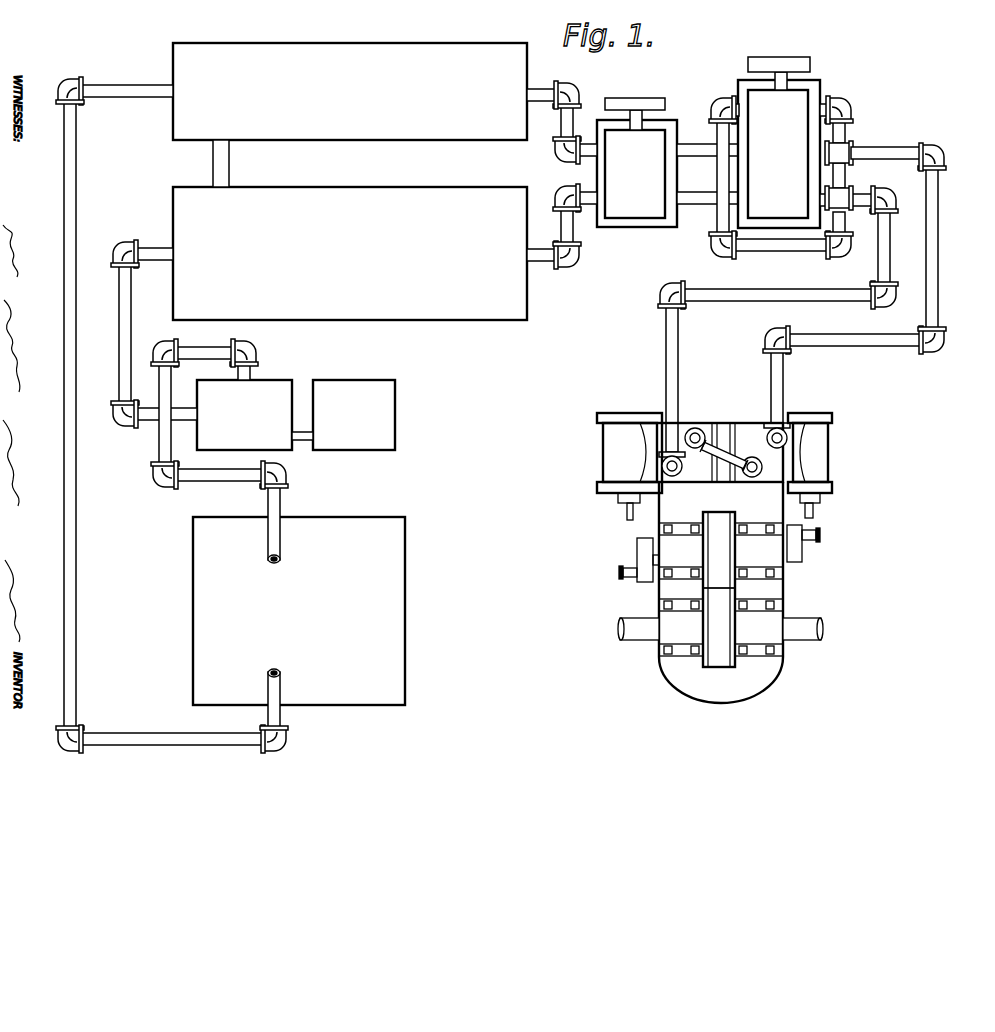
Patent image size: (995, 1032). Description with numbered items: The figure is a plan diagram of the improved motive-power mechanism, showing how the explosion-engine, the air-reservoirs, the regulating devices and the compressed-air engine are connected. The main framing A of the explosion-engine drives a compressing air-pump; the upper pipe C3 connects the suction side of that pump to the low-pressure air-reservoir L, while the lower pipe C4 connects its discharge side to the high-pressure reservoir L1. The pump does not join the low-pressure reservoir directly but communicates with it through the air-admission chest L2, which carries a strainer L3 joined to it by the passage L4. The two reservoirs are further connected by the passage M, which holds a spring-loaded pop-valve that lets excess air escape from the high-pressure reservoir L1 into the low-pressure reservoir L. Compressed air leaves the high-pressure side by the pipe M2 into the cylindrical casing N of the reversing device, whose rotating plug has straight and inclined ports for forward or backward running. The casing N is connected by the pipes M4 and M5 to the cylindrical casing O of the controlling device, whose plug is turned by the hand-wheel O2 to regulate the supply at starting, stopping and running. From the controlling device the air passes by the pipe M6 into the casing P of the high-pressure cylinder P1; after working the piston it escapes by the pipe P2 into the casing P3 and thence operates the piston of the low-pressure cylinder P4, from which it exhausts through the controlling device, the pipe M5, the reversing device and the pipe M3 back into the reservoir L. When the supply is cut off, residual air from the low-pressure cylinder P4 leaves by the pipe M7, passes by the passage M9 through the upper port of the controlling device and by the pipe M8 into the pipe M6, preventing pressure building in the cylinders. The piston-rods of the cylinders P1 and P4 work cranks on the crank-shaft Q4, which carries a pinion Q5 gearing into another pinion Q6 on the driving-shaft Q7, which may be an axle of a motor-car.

The high-pressure reservoir L1 is at (350, 91).
The low-pressure air-reservoir L is at (350, 253).
The passage M is at (221, 161).
The air-admission chest L2 is at (244, 415).
The strainer L3 is at (354, 415).
The passage L4 is at (302, 441).
The main framing of the explosion-engine A is at (299, 611).
The pipe C4 is at (118, 86).
The pipe C3 is at (140, 283).
The cylindrical casing N is at (637, 162).
The pipe M2 is at (567, 92).
The pipe M3 is at (570, 253).
The pipe M4 is at (686, 152).
The pipe M5 is at (697, 202).
The cylindrical casing O is at (779, 154).
The hand-wheel O2 is at (784, 63).
The passage M9 is at (714, 100).
The pipe M8 is at (838, 112).
The pipe M6 is at (872, 150).
The pipe M7 is at (885, 237).
The low-pressure cylinder P4 is at (615, 448).
The high-pressure cylinder P1 is at (810, 450).
The casing P is at (747, 428).
The pipe P2 is at (727, 427).
The casing P3 is at (684, 427).
The pinion Q5 is at (721, 592).
The pinion Q6 is at (719, 612).
The crank-shaft Q4 is at (648, 546).
The driving-shaft Q7 is at (633, 633).